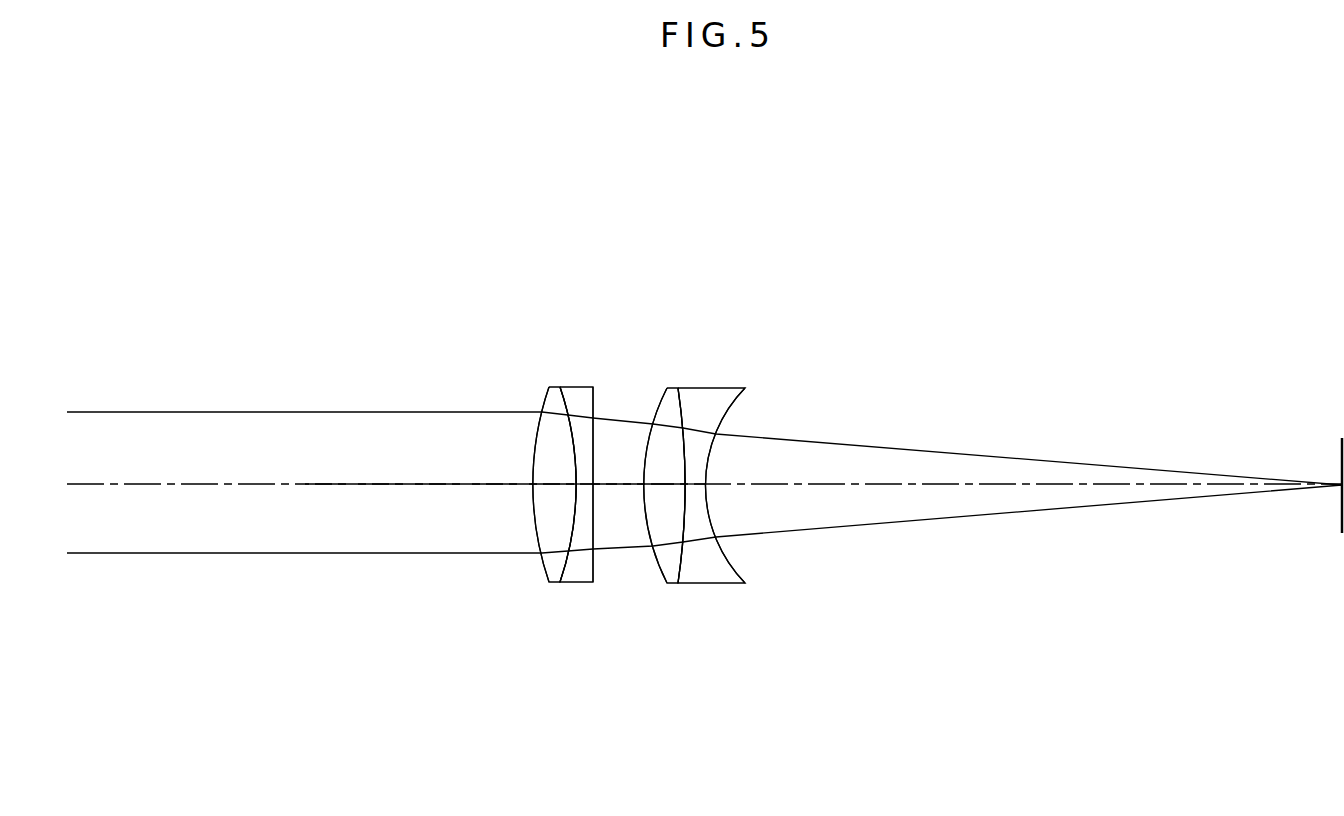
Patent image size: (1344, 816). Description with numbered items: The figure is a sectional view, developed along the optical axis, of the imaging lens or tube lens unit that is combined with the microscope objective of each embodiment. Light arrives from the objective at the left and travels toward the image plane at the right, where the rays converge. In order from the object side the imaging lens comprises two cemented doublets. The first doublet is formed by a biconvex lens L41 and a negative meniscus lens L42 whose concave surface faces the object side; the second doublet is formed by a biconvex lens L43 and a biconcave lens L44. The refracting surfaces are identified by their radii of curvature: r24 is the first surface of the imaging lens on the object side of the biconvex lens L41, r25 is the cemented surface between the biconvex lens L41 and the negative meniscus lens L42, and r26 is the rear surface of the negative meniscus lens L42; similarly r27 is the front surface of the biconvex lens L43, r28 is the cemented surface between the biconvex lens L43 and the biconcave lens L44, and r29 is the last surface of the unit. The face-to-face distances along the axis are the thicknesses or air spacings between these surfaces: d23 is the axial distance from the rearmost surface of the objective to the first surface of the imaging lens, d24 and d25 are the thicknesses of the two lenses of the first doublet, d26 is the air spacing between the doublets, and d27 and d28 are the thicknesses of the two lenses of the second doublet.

The biconvex lens L41 is at (557, 395).
The negative meniscus lens L42 is at (586, 393).
The biconvex lens L43 is at (673, 395).
The biconcave lens L44 is at (712, 393).
The radius of curvature r24 is at (546, 397).
The radius of curvature r25 is at (573, 393).
The radius of curvature r26 is at (594, 394).
The radius of curvature r27 is at (659, 397).
The radius of curvature r28 is at (680, 402).
The radius of curvature r29 is at (727, 410).
The axial distance d23 is at (312, 484).
The face-to-face distance d24 is at (555, 583).
The face-to-face distance d25 is at (582, 583).
The face-to-face distance d26 is at (614, 583).
The face-to-face distance d27 is at (671, 583).
The face-to-face distance d28 is at (708, 583).